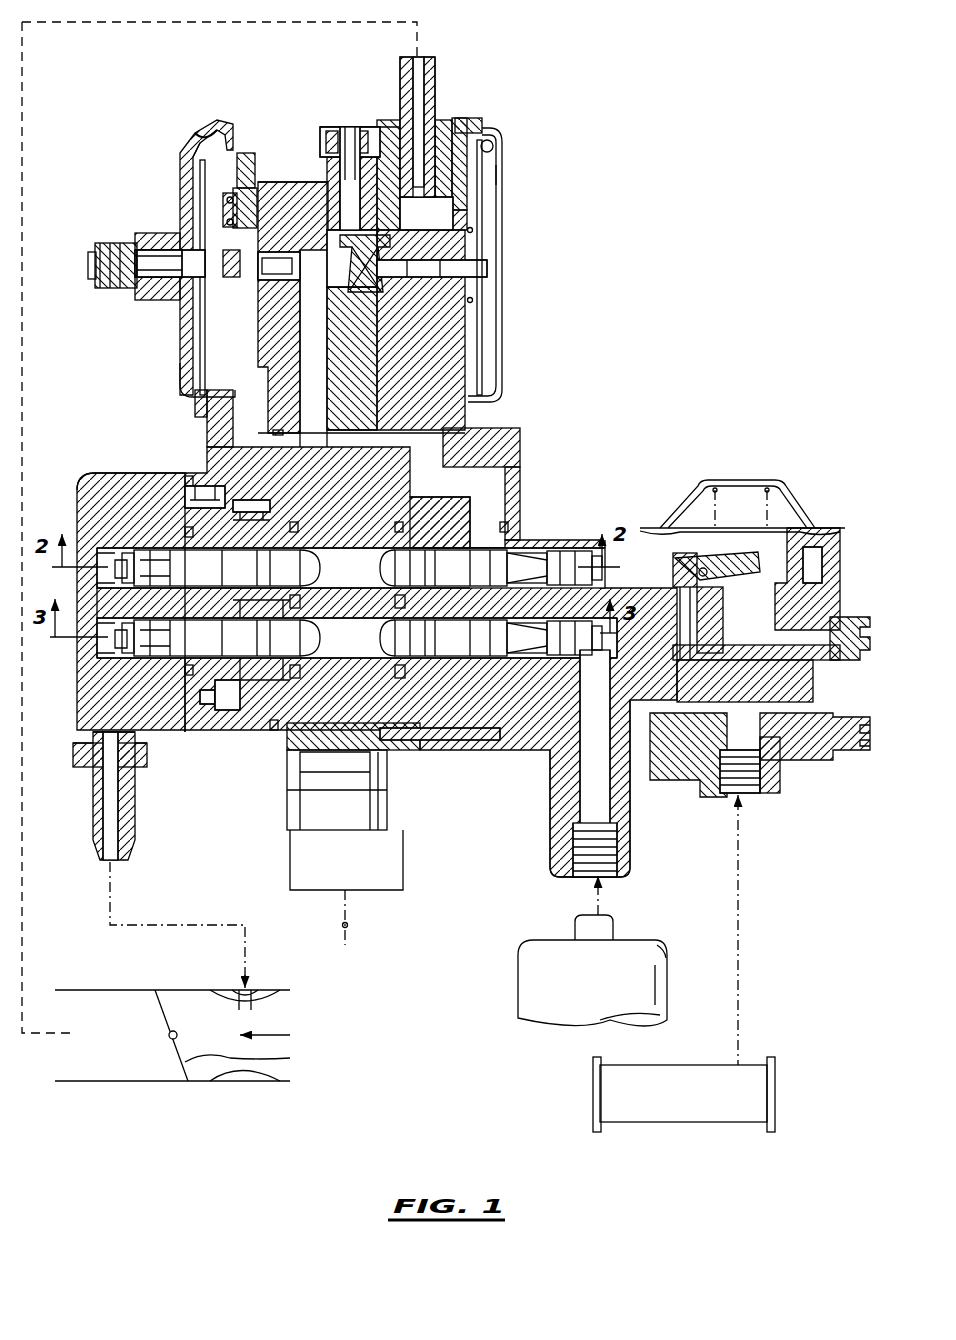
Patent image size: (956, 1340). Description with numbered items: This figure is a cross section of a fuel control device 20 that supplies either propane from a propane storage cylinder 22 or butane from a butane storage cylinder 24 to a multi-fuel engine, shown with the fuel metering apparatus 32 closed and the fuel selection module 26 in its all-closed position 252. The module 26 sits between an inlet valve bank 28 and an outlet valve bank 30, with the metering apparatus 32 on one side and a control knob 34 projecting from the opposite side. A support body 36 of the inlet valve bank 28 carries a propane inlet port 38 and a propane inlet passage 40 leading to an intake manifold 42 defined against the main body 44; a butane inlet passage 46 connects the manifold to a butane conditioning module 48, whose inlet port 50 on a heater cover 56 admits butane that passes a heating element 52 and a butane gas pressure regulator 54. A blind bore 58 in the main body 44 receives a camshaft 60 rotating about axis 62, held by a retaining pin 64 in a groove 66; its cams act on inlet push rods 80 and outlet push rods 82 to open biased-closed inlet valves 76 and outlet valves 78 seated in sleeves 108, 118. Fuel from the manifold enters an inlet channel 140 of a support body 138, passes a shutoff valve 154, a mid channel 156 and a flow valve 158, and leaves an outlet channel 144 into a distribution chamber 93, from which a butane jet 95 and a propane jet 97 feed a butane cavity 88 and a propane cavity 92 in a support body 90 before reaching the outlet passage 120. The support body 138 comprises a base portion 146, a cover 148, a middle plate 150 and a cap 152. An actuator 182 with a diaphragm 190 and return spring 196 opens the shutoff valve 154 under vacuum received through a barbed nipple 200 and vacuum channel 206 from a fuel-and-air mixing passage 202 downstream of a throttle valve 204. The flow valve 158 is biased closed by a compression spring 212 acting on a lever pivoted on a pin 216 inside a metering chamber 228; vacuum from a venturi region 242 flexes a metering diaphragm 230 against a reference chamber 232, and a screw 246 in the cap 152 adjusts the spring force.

The fuel control device 20 is at (657, 136).
The propane storage cylinder 22 is at (592, 951).
The butane storage cylinder 24 is at (684, 963).
The fuel selection module 26 is at (432, 770).
The all-closed position 252 is at (377, 662).
The inlet valve bank 28 is at (568, 447).
The outlet valve bank 30 is at (133, 403).
The fuel metering apparatus 32 is at (329, 239).
The control knob 34 is at (346, 860).
The support body 36 is at (547, 733).
The propane inlet port 38 is at (607, 880).
The propane inlet passage 40 is at (600, 775).
The intake manifold 42 is at (483, 520).
The main body 44 is at (223, 727).
The butane inlet passage 46 is at (632, 562).
The butane conditioning module 48 is at (748, 636).
The inlet port 50 is at (653, 562).
The heating element 52 is at (787, 685).
The butane gas pressure regulator 54 is at (797, 528).
The heater cover 56 is at (770, 783).
The blind bore 58 is at (365, 528).
The camshaft 60 is at (338, 777).
The axis 62 is at (347, 925).
The retaining pin 64 is at (453, 740).
The groove 66 is at (317, 733).
The inlet valve 76 is at (531, 539).
The outlet valve 78 is at (117, 650).
The inlet push rod 80 is at (443, 603).
The outlet push rod 82 is at (221, 603).
The butane cavity 88 is at (192, 543).
The support body 90 is at (110, 487).
The propane cavity 92 is at (193, 665).
The distribution chamber 93 is at (253, 517).
The butane jet 95 is at (215, 507).
The propane jet 97 is at (215, 700).
The sleeve 108 is at (552, 547).
The sleeve 118 is at (152, 547).
The outlet passage 120 is at (112, 775).
The support body 138 is at (454, 117).
The inlet channel 140 is at (310, 372).
The outlet channel 144 is at (240, 418).
The base portion 146 is at (287, 133).
The cover 148 is at (465, 228).
The middle plate 150 is at (388, 130).
The cap 152 is at (178, 186).
The shutoff valve 154 is at (327, 248).
The mid channel 156 is at (302, 173).
The flow valve 158 is at (245, 150).
The actuator 182 is at (508, 237).
The diaphragm 190 is at (492, 150).
The return spring 196 is at (500, 172).
The barbed nipple 200 is at (432, 62).
The fuel-and-air mixing passage 202 is at (123, 1063).
The throttle valve 204 is at (187, 1063).
The vacuum channel 206 is at (24, 957).
The compression spring 212 is at (245, 253).
The pin 216 is at (230, 200).
The metering chamber 228 is at (235, 297).
The metering diaphragm 230 is at (210, 157).
The reference chamber 232 is at (212, 157).
The venturi region 242 is at (243, 1018).
The screw 246 is at (115, 248).